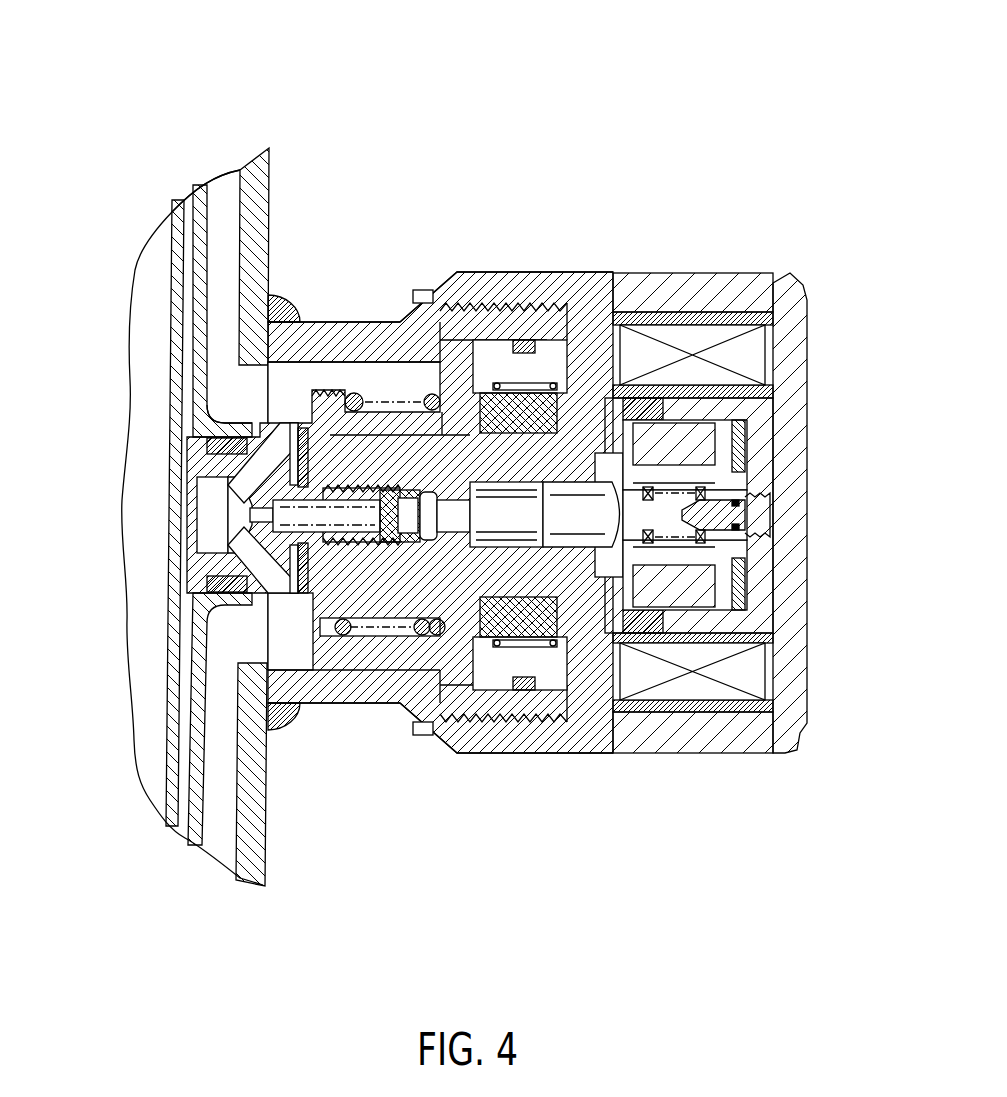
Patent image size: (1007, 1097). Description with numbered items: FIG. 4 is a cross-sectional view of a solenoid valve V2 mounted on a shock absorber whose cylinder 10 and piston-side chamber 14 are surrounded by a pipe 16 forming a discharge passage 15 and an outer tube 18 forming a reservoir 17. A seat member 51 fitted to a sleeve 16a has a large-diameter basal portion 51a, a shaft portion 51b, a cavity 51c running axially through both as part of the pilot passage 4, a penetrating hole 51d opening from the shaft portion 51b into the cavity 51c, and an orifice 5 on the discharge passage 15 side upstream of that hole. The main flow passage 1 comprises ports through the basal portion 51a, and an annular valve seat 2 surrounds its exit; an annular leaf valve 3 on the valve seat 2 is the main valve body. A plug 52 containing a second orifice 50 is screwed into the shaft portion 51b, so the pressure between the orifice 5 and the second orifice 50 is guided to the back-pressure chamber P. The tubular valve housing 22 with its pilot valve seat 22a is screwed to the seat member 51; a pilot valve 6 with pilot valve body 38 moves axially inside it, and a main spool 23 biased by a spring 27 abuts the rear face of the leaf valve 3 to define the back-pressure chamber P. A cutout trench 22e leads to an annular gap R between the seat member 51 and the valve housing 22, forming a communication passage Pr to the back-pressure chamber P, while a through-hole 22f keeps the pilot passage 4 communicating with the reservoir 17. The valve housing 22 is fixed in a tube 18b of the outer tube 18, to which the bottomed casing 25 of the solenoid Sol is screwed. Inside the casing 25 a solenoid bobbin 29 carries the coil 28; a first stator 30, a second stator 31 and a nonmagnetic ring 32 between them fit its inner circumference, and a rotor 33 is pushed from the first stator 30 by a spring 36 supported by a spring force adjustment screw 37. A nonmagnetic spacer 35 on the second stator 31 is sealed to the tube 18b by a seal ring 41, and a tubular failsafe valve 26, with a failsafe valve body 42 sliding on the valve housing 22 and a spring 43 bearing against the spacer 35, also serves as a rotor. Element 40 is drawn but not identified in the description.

The main flow passage 1 is at (197, 483).
The valve seat 2 is at (298, 323).
The leaf valve 3 is at (263, 612).
The pilot passage 4 is at (240, 520).
The orifice 5 is at (280, 530).
The pilot valve 6 is at (507, 340).
The cylinder 10 is at (172, 247).
The piston-side chamber 14 is at (147, 578).
The discharge passage 15 is at (187, 205).
The pipe 16 is at (180, 332).
The sleeve 16a is at (228, 410).
The reservoir 17 is at (222, 190).
The outer tube 18 is at (272, 175).
The tube 18b is at (408, 300).
The valve housing 22 is at (453, 337).
The pilot valve seat 22a is at (458, 712).
The cutout trench 22e is at (290, 450).
The through-hole 22f is at (537, 367).
The main spool 23 is at (365, 645).
The casing 25 is at (793, 275).
The failsafe valve 26 is at (545, 385).
The spring 27 is at (345, 636).
The coil 28 is at (747, 355).
The solenoid bobbin 29 is at (720, 310).
The first stator 30 is at (767, 433).
The second stator 31 is at (600, 700).
The nonmagnetic ring 32 is at (637, 397).
The rotor 33 is at (730, 590).
The spacer 35 is at (574, 487).
The spring 36 is at (700, 548).
The spring force adjustment screw 37 is at (763, 503).
The pilot valve body 38 is at (585, 437).
The nut 40 is at (540, 720).
The seal ring 41 is at (527, 340).
The failsafe valve body 42 is at (477, 713).
The spring 43 is at (545, 712).
The second orifice 50 is at (413, 722).
The seat member 51 is at (182, 593).
The basal portion 51a is at (300, 668).
The shaft portion 51b is at (365, 440).
The cavity 51c is at (390, 645).
The penetrating hole 51d is at (307, 445).
The plug 52 is at (458, 378).
The back-pressure chamber P is at (307, 650).
The communication passage Pr is at (248, 505).
The annular gap R is at (335, 700).
The solenoid Sol is at (675, 303).
The solenoid valve V2 is at (705, 230).